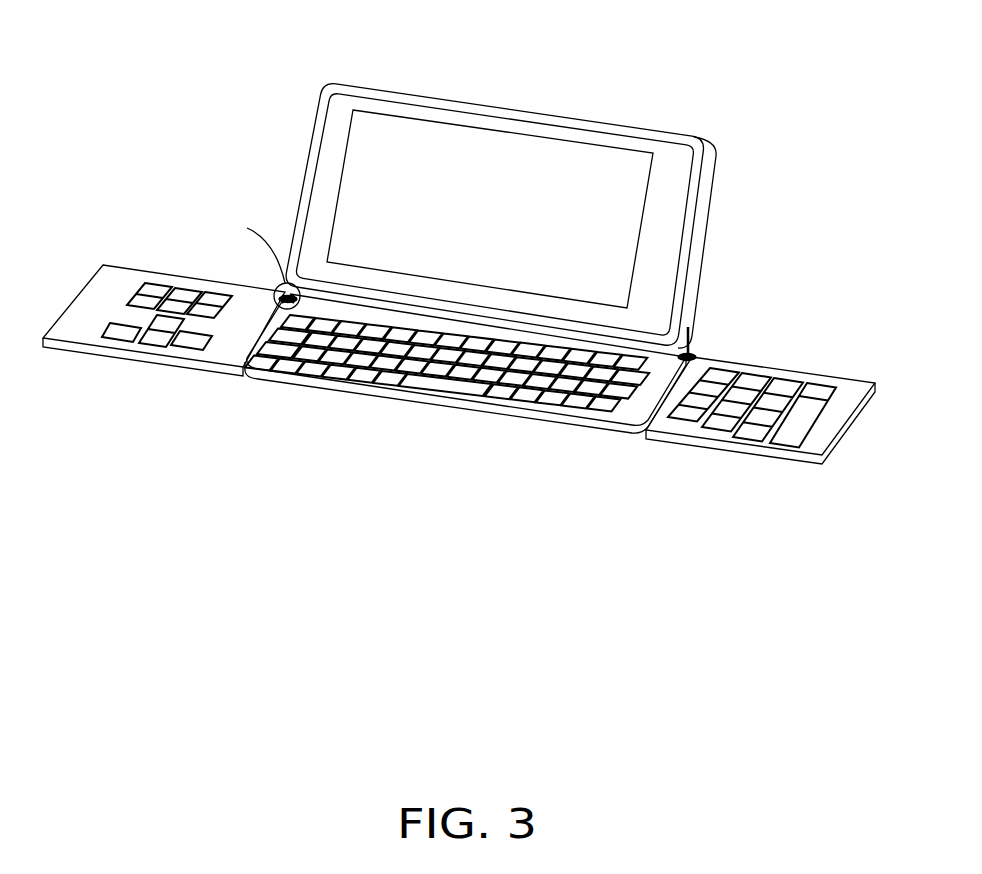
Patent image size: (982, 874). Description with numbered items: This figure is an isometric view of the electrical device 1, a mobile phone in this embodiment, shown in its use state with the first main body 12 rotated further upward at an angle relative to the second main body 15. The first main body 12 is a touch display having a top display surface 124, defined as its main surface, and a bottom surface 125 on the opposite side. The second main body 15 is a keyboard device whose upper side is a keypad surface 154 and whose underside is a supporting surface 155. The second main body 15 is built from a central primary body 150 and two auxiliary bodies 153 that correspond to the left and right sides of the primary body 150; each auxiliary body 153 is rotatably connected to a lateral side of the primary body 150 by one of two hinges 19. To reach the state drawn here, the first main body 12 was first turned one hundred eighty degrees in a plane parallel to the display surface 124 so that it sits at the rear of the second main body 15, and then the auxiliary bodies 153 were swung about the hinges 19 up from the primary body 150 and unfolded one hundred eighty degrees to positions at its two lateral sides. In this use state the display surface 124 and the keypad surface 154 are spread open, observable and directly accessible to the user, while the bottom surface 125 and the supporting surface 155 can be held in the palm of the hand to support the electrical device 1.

The electrical device 1 is at (473, 45).
The first main body 12 is at (667, 218).
The display surface 124 is at (567, 173).
The bottom surface 125 is at (703, 253).
The second main body 15 is at (630, 412).
The primary body 150 is at (425, 378).
The auxiliary bodies 153 is at (812, 443).
The keypad surface 154 is at (533, 385).
The supporting surface 155 is at (295, 383).
The hinges 19 is at (278, 295).